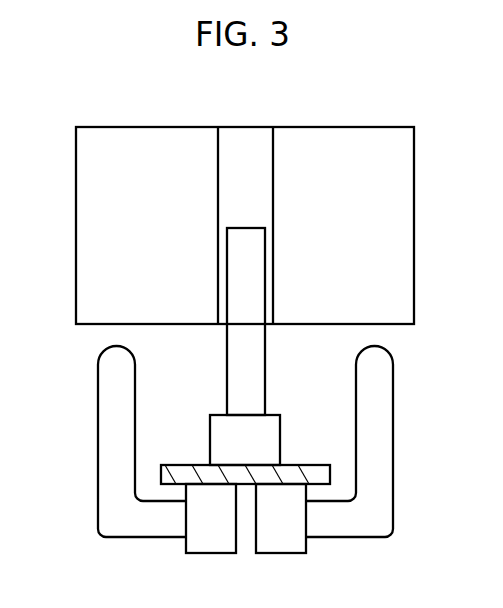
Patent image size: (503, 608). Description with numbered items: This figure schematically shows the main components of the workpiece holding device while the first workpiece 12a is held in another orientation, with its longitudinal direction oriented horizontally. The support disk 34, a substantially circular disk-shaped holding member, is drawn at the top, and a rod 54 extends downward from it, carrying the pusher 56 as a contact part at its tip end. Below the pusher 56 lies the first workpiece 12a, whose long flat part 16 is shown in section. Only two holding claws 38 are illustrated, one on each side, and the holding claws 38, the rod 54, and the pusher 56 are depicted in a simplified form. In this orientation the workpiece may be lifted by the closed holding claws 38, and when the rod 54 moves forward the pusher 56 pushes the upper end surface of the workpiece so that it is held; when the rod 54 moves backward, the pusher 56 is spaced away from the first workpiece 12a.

The support disk 34 is at (395, 207).
The rod 54 is at (243, 250).
The pusher 56 is at (270, 427).
The first workpiece 12a is at (335, 475).
The flat part 16 is at (188, 462).
The holding claws 38 is at (117, 422).